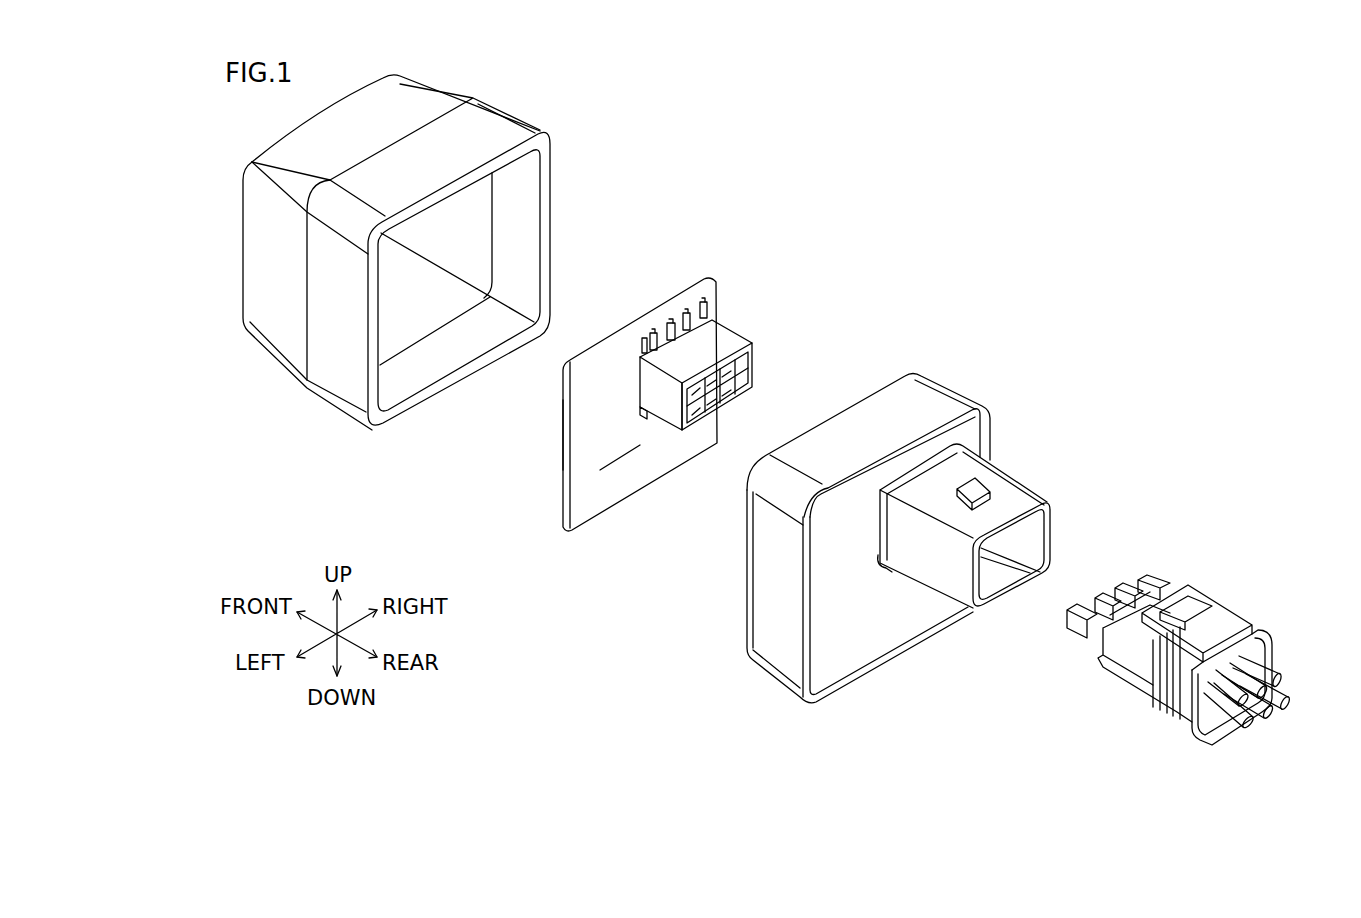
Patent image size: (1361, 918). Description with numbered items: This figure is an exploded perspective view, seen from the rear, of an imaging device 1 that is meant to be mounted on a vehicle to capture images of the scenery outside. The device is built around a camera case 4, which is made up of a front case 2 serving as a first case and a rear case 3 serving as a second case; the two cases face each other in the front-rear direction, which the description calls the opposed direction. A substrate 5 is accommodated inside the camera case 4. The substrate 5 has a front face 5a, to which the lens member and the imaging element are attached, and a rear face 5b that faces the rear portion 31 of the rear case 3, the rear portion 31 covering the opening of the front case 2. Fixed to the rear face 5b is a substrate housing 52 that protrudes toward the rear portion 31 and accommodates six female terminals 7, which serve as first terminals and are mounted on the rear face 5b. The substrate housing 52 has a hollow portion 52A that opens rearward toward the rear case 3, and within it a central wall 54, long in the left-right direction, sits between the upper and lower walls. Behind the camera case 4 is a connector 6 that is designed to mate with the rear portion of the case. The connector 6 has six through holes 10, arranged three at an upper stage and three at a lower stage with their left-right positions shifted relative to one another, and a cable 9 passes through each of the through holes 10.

The imaging device 1 is at (1027, 171).
The front case 2 is at (578, 201).
The rear case 3 is at (900, 351).
The camera case 4 is at (710, 141).
The substrate 5 is at (723, 265).
The front face 5a is at (560, 440).
The rear face 5b is at (592, 470).
The connector 6 is at (1226, 575).
The female terminals 7 is at (687, 313).
The cables 9 is at (1266, 668).
The through holes 10 is at (1256, 633).
The rear portion 31 is at (952, 387).
The substrate housing 52 is at (713, 342).
The hollow portion 52A is at (757, 365).
The central wall 54 is at (750, 390).